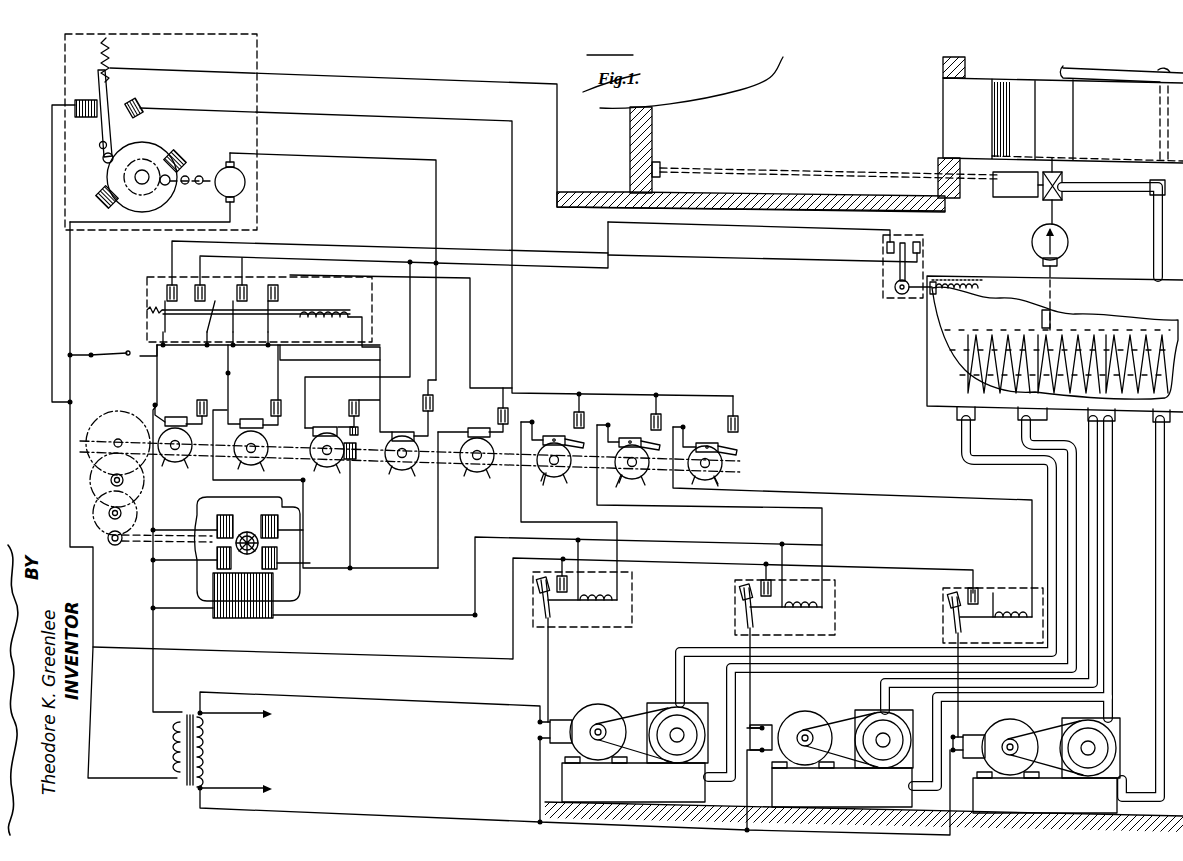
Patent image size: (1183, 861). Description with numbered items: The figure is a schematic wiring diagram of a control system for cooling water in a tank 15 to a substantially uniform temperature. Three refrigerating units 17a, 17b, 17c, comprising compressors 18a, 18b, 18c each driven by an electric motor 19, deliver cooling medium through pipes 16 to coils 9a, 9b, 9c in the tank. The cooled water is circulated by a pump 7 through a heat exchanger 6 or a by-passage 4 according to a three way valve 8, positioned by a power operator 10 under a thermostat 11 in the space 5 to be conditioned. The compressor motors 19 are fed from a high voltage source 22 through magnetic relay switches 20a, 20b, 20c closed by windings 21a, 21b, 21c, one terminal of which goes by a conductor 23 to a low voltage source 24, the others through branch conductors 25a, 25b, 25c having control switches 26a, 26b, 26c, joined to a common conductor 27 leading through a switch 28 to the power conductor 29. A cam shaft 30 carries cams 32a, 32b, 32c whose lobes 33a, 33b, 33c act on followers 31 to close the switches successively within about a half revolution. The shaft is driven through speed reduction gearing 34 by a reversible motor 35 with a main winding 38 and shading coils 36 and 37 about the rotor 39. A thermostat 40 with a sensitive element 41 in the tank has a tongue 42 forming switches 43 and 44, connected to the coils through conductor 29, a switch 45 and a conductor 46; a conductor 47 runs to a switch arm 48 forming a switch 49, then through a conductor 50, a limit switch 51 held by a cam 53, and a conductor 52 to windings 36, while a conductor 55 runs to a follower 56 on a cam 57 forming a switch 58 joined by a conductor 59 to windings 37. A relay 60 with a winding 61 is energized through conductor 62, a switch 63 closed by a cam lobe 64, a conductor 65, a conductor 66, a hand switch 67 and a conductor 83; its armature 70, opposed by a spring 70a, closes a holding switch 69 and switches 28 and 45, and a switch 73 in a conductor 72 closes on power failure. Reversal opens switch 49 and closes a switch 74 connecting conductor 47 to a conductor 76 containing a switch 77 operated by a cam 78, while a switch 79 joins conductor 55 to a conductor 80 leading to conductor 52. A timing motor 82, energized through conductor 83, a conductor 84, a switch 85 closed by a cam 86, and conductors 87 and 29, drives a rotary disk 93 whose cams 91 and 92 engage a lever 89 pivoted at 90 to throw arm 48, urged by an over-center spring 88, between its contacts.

The by-passage 4 is at (1118, 192).
The space 5 is at (677, 122).
The heat exchanger 6 is at (1068, 128).
The pump 7 is at (1031, 243).
The three way valve 8 is at (1062, 196).
The coil 9a is at (1140, 350).
The coil 9b is at (1070, 350).
The coil 9c is at (1000, 350).
The power operator 10 is at (1010, 196).
The thermostat 11 is at (660, 165).
The tank 15 is at (935, 322).
The pipes 16 is at (1090, 536).
The refrigerating unit 17a is at (1040, 804).
The refrigerating unit 17b is at (850, 776).
The refrigerating unit 17c is at (562, 768).
The compressor 18a is at (1115, 722).
The compressor 18b is at (857, 716).
The compressor 18c is at (652, 713).
The electric motor 19 is at (598, 708).
The magnetic relay switch 20a is at (954, 595).
The magnetic relay switch 20b is at (748, 585).
The magnetic relay switch 20c is at (540, 578).
The winding 21a is at (1000, 612).
The winding 21b is at (822, 610).
The winding 21c is at (617, 598).
The high voltage source 22 is at (206, 758).
The conductor 23 is at (730, 548).
The low voltage current source 24 is at (173, 748).
The branch conductor 25a is at (1002, 500).
The branch conductor 25b is at (824, 510).
The branch conductor 25c is at (620, 524).
The control switch 26a is at (745, 432).
The control switch 26b is at (651, 416).
The control switch 26c is at (574, 414).
The common conductor 27 is at (468, 350).
The switch 28 is at (245, 258).
The power conductor 29 is at (157, 386).
The cam shaft 30 is at (433, 476).
The follower 31 is at (550, 434).
The cam 32a is at (722, 476).
The cam 32b is at (640, 480).
The cam 32c is at (568, 478).
The lobe 33a is at (724, 464).
The lobe 33b is at (622, 484).
The lobe 33c is at (547, 480).
The speed reduction gearing 34 is at (97, 502).
The reversible motor 35 is at (300, 592).
The windings 36 is at (282, 532).
The windings 37 is at (217, 525).
The main winding 38 is at (255, 618).
The rotor 39 is at (250, 532).
The thermostat 40 is at (881, 284).
The sensitive element 41 is at (943, 296).
The tongue 42 is at (925, 268).
The switch 43 is at (922, 245).
The switch 44 is at (886, 258).
The switch 45 is at (170, 292).
The conductor 46 is at (700, 258).
The conductor 47 is at (559, 170).
The switch arm 48 is at (78, 101).
The switch 49 is at (80, 118).
The conductor 50 is at (52, 283).
The limit switch 51 is at (197, 405).
The conductor 52 is at (308, 496).
The cam 53 is at (180, 462).
The conductor 55 is at (565, 269).
The follower 56 is at (349, 406).
The cam 57 is at (331, 466).
The switch 58 is at (356, 462).
The conductor 59 is at (350, 570).
The relay 60 is at (355, 312).
The winding 61 is at (336, 312).
The conductor 62 is at (226, 373).
The switch 63 is at (271, 412).
The cam lobe 64 is at (268, 436).
The conductor 65 is at (278, 387).
The conductor 66 is at (140, 355).
The switch 67 is at (105, 362).
The switch 69 is at (285, 250).
The armature 70 is at (203, 316).
The spring 70a is at (140, 317).
The conductor 72 is at (388, 258).
The switch 73 is at (176, 260).
The switch 74 is at (128, 104).
The conductor 76 is at (466, 121).
The switch 77 is at (498, 428).
The cam 78 is at (485, 470).
The switch 79 is at (383, 402).
The conductor 80 is at (303, 478).
The timing motor 82 is at (246, 182).
The conductor 83 is at (72, 262).
The conductor 84 is at (438, 197).
The switch 85 is at (420, 432).
The cam 86 is at (403, 470).
The conductor 87 is at (112, 70).
The over-center spring 88 is at (100, 44).
The lever 89 is at (110, 110).
The pivot 90 is at (100, 146).
The cam 91 is at (100, 190).
The cam 92 is at (183, 155).
The rotary disk 93 is at (157, 205).